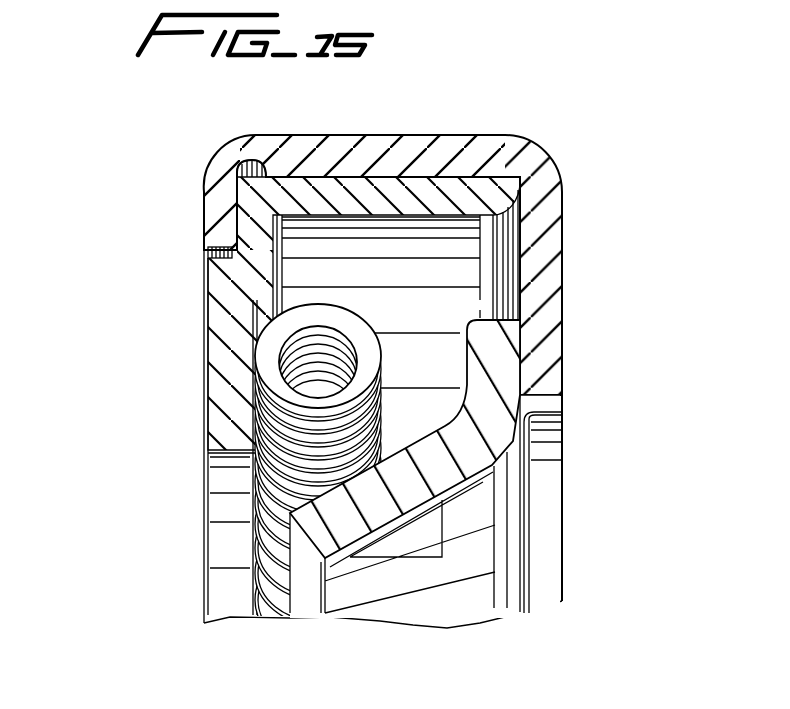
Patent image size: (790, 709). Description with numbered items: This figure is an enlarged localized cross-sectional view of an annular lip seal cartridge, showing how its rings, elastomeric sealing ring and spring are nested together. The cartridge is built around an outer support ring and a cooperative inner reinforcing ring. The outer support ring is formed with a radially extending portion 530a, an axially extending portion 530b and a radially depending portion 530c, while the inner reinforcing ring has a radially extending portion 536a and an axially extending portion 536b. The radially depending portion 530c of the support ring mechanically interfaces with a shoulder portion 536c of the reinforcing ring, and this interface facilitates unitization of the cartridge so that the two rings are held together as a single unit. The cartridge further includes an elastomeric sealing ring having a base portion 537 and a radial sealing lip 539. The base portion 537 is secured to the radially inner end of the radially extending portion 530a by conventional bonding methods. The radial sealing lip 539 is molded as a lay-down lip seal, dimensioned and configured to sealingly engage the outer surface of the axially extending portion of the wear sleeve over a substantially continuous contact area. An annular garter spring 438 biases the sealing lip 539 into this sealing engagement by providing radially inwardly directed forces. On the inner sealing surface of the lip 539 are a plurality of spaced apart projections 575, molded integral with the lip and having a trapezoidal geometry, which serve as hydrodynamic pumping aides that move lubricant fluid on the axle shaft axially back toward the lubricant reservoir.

The radially extending portion 530a is at (548, 262).
The axially extending portion 530b is at (413, 148).
The radially depending portion 530c is at (224, 208).
The radially extending portion 536a is at (228, 367).
The axially extending portion 536b is at (372, 190).
The shoulder portion 536c is at (256, 238).
The annular garter spring 438 is at (303, 422).
The base portion 537 is at (500, 358).
The radial sealing lip 539 is at (455, 452).
The projections 575 is at (443, 545).